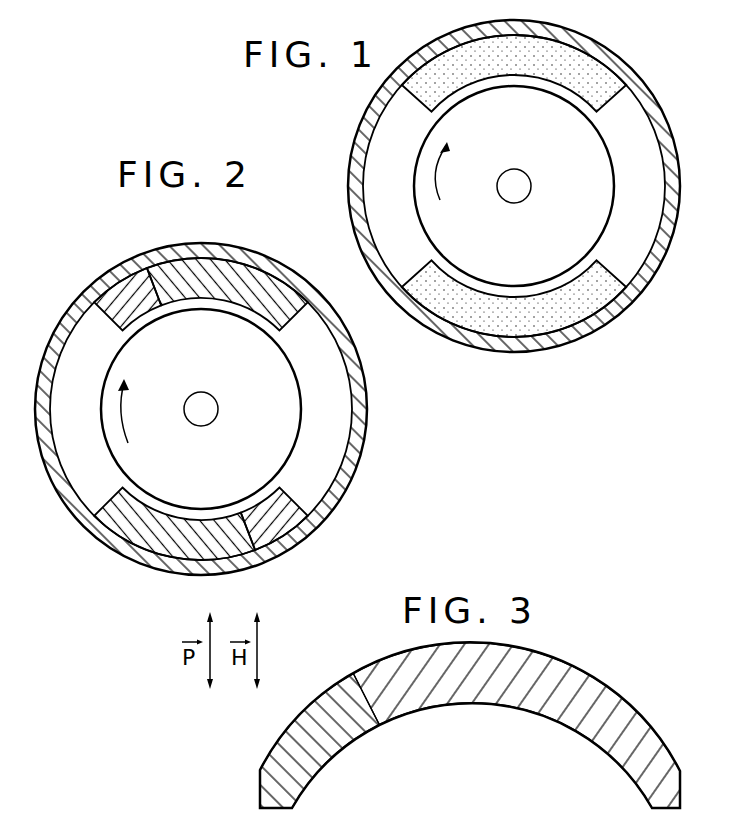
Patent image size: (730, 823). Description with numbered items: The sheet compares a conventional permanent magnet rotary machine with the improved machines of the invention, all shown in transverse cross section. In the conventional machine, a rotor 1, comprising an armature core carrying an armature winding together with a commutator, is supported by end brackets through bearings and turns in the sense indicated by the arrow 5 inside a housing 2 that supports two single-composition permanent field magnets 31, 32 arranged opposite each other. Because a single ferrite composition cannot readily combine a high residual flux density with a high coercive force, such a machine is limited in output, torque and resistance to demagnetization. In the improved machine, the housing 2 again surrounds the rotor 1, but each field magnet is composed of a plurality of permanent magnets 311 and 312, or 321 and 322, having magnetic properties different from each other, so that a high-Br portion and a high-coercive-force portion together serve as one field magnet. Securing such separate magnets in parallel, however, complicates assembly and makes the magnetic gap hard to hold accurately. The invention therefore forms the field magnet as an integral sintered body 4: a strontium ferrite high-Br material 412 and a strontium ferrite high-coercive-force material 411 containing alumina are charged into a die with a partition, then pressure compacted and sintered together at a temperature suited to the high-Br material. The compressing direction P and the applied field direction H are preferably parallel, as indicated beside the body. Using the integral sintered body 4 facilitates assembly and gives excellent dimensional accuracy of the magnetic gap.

In FIG. 1, the rotor 1 is at (597, 183).
In FIG. 2, the rotor 1 is at (287, 403).
In FIG. 1, the housing 2 is at (660, 250).
In FIG. 2, the housing 2 is at (358, 445).
In FIG. 1, the permanent field magnet 31 is at (592, 72).
In FIG. 1, the permanent field magnet 32 is at (600, 298).
In FIG. 1, the rotation direction arrow 5 is at (440, 176).
In FIG. 2, the permanent magnet 311 is at (223, 263).
In FIG. 2, the permanent magnet 312 is at (120, 290).
In FIG. 2, the permanent magnet 321 is at (125, 537).
In FIG. 2, the permanent magnet 322 is at (287, 522).
In FIG. 3, the integral sintered body 4 is at (603, 698).
In FIG. 3, the high-coercive-force material 411 is at (338, 743).
In FIG. 3, the high-Br material 412 is at (445, 697).